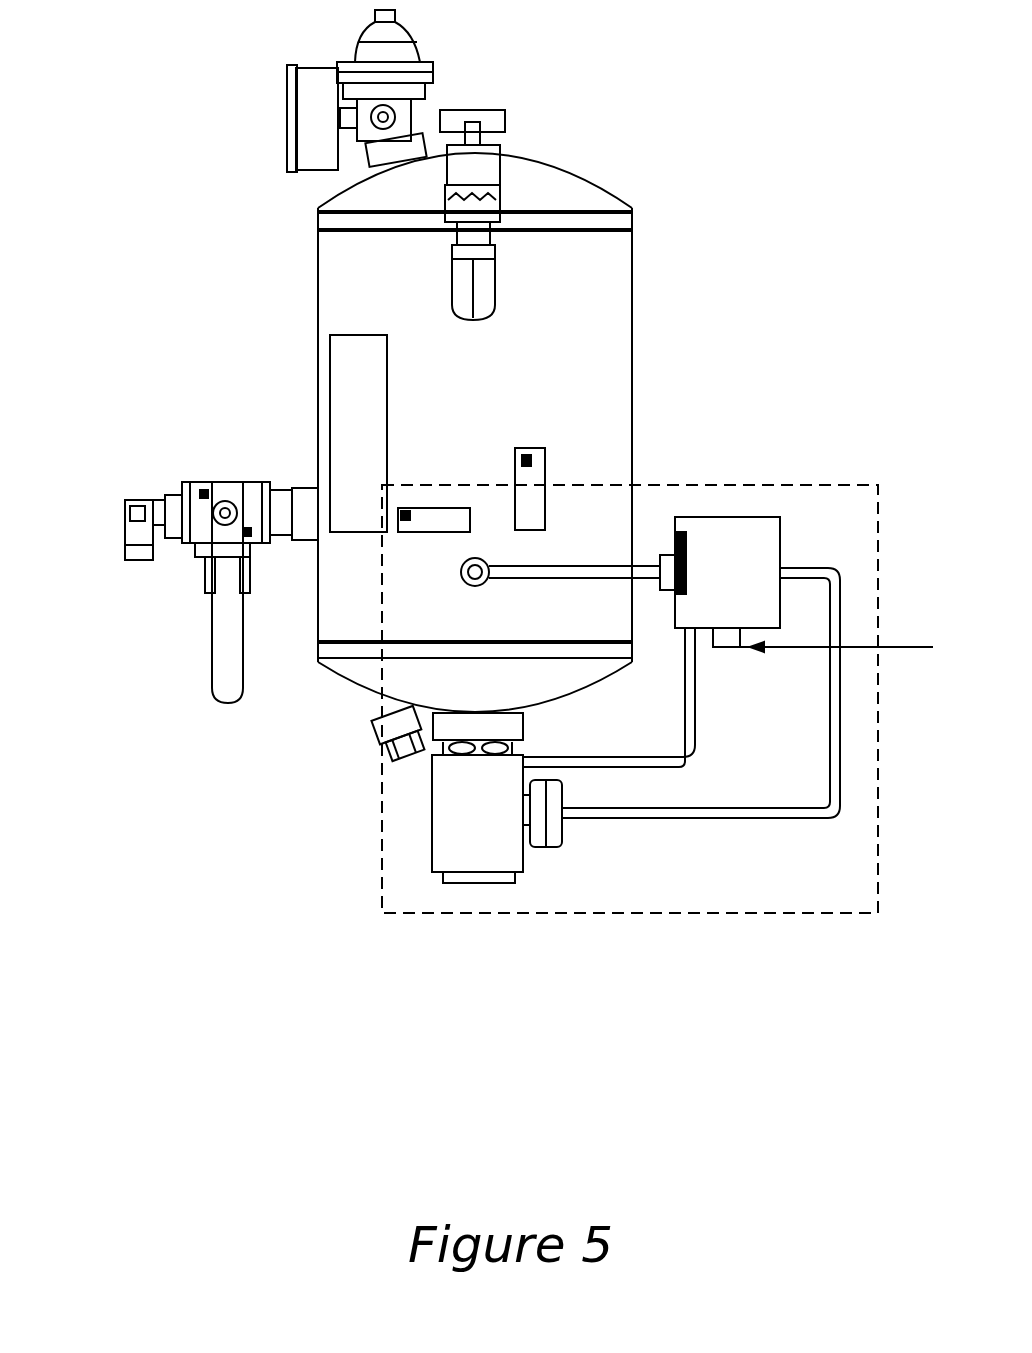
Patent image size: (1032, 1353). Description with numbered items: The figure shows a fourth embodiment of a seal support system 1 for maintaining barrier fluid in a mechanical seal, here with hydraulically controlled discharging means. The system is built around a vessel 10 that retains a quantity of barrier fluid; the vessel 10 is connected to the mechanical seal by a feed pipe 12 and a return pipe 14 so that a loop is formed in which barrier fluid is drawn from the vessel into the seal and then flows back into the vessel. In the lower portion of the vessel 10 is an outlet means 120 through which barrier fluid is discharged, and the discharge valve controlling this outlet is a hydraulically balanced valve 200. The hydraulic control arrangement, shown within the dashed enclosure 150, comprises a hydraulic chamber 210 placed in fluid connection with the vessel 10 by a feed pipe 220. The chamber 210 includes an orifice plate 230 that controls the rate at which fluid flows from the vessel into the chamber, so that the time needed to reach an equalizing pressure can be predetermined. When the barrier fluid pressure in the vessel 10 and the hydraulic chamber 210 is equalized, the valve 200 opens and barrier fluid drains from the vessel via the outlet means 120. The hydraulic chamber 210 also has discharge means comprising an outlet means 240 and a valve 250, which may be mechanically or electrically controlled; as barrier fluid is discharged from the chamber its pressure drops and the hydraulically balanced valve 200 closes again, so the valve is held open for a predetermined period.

The seal support system 1 is at (206, 108).
The vessel 10 is at (628, 187).
The feed pipe 12 is at (375, 756).
The return pipe 14 is at (220, 628).
The outlet means 120 is at (447, 884).
The control module 150 is at (873, 475).
The hydraulically balanced valve 200 is at (462, 772).
The hydraulic chamber 210 is at (762, 507).
The feed pipe 220 is at (580, 552).
The orifice plate 230 is at (680, 530).
The outlet means 240 is at (795, 818).
The valve 250 is at (556, 836).